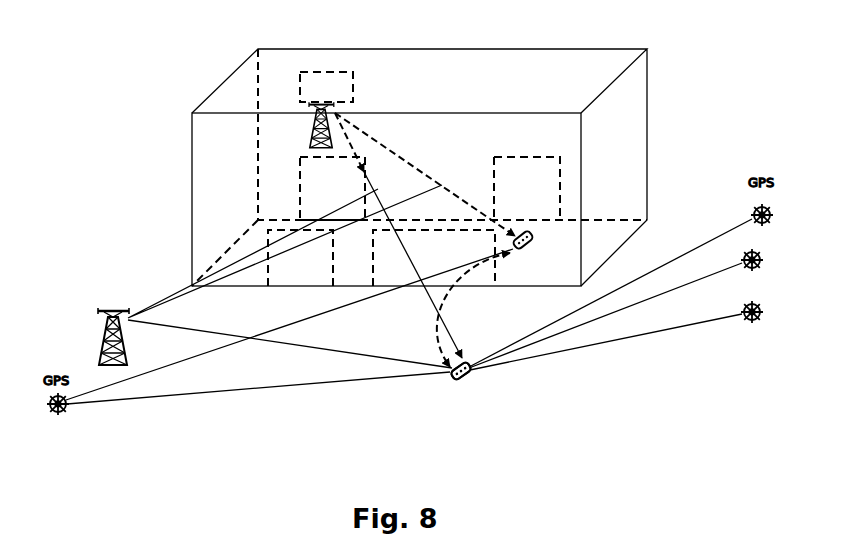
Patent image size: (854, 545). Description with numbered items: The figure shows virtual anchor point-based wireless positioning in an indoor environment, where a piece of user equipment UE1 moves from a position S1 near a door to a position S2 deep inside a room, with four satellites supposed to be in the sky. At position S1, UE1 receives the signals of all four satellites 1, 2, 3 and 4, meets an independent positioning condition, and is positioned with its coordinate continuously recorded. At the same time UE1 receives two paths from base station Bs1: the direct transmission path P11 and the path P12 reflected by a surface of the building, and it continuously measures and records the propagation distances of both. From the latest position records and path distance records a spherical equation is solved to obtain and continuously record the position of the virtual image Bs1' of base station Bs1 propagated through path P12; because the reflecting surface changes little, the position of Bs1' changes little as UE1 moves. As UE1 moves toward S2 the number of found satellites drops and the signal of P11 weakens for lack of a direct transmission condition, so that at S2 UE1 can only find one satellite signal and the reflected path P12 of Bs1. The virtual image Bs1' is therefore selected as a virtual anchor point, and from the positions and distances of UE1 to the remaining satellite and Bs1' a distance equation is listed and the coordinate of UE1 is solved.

The base station Bs1 is at (113, 327).
The virtual image of base station Bs1' is at (332, 146).
The direct transmission path P11 is at (290, 345).
The reflected path P12 is at (321, 235).
The position S1 is at (448, 381).
The position S2 is at (310, 315).
The user equipment UE1 is at (467, 384).
The satellite GPS1 1 is at (621, 283).
The satellite GPS2 2 is at (616, 308).
The satellite GPS3 3 is at (616, 335).
The satellite GPS4 4 is at (242, 393).